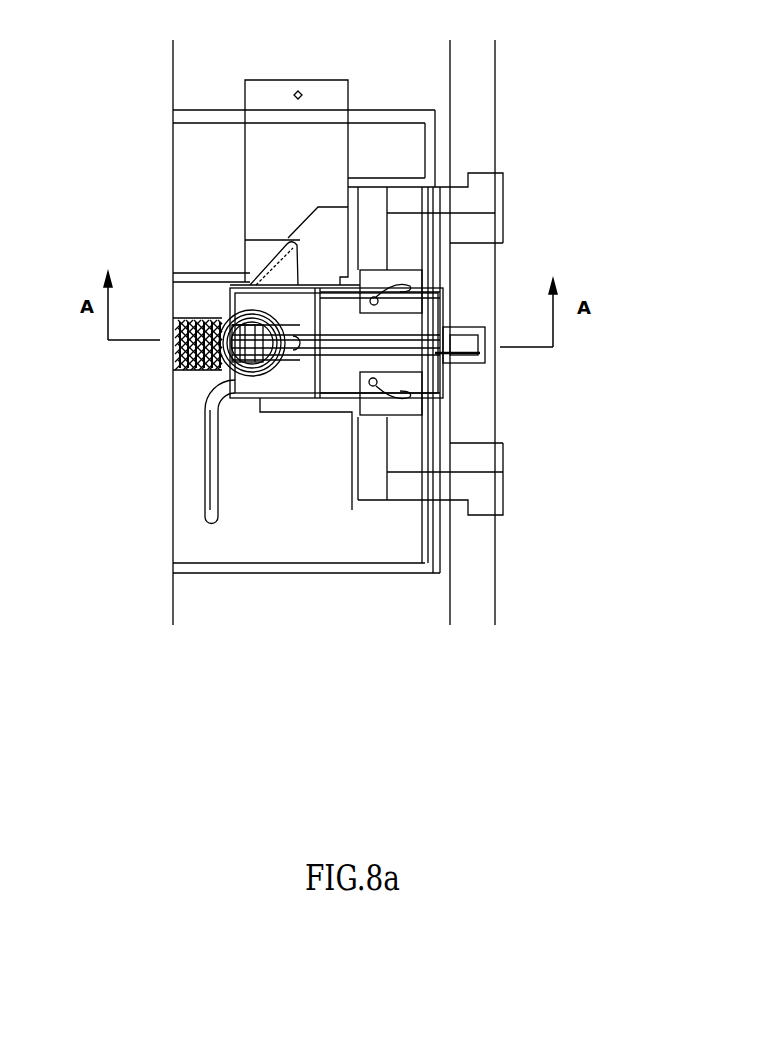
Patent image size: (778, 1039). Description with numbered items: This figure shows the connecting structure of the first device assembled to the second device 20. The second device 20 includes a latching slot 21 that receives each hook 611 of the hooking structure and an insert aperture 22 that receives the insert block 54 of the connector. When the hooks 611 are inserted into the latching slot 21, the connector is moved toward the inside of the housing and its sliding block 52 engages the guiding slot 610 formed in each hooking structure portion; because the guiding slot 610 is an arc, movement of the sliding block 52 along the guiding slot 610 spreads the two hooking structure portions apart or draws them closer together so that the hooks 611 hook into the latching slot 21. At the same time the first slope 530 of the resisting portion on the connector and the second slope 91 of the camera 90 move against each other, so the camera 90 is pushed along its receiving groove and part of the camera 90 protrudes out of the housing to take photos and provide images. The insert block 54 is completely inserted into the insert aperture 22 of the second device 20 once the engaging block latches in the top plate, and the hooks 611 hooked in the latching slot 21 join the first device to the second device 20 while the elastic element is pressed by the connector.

The second device 20 is at (480, 107).
The latching slot 21 is at (483, 243).
The insert aperture 22 is at (483, 349).
The sliding block 52 is at (373, 390).
The insert block 54 is at (483, 358).
The camera 90 is at (250, 148).
The second slope 91 is at (300, 218).
The first slope 530 is at (255, 270).
The guiding slot 610 is at (402, 407).
The hook 611 is at (480, 187).